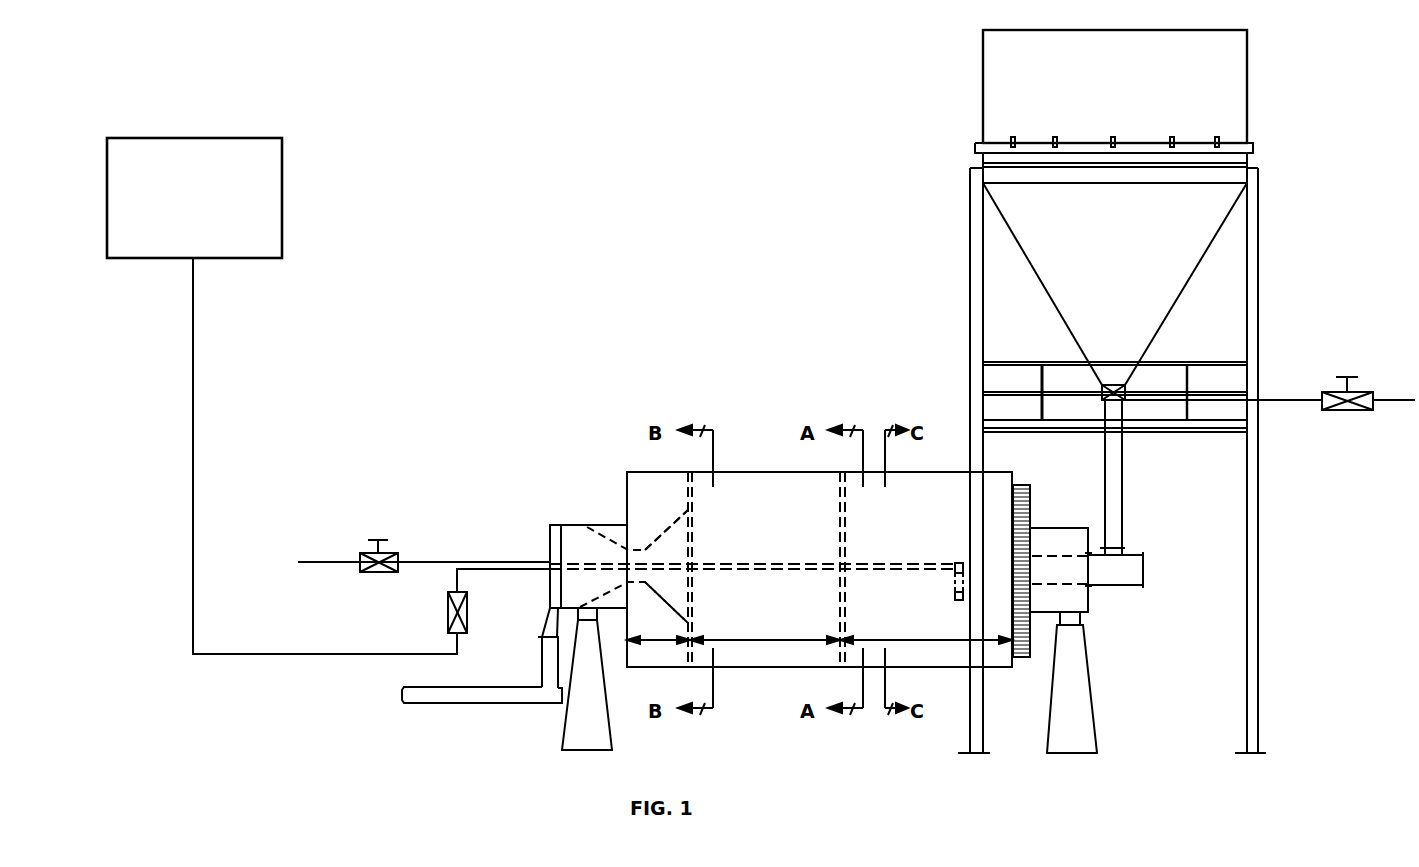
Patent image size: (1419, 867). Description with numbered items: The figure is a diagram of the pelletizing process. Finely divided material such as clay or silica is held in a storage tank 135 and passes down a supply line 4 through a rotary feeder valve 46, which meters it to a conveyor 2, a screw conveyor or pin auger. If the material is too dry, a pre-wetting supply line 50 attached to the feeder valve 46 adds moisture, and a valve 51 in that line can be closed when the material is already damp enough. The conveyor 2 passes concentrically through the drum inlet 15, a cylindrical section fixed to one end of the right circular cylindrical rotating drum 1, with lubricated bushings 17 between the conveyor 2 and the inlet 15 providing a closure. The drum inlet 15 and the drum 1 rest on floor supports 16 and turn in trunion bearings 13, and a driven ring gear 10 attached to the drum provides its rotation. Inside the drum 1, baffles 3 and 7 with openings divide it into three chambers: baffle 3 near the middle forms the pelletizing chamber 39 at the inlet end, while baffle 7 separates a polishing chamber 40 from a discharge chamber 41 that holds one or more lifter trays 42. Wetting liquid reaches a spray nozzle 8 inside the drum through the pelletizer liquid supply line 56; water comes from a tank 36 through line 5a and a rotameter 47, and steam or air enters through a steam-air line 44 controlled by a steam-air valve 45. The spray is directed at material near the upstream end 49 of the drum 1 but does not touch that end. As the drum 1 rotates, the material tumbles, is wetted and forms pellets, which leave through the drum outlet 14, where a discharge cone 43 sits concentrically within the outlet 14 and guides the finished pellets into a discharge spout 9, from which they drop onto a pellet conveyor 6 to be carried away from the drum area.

The rotating drum 1 is at (906, 474).
The conveyor 2 is at (1124, 583).
The baffle 3 is at (842, 544).
The supply line 4 is at (1123, 465).
The line 5a is at (228, 350).
The pellet conveyor 6 is at (480, 694).
The baffle 7 is at (676, 526).
The spray nozzle 8 is at (955, 596).
The discharge spout 9 is at (533, 640).
The driven ring gear 10 is at (1015, 487).
The trunion bearings 13 is at (597, 620).
The drum outlet 14 is at (548, 585).
The drum inlet 15 is at (1070, 553).
The floor supports 16 is at (602, 740).
The lubricated bushings 17 is at (1090, 588).
The tank 36 is at (200, 203).
The pelletizing chamber 39 is at (903, 628).
The polishing chamber 40 is at (776, 628).
The discharge chamber 41 is at (668, 628).
The lifter trays 42 is at (678, 616).
The discharge cone 43 is at (607, 535).
The steam-air line 44 is at (431, 568).
The steam-air valve 45 is at (387, 552).
The rotary feeder valve 46 is at (1102, 390).
The rotameter 47 is at (467, 603).
The upstream end 49 is at (1014, 516).
The pre-wetting supply line 50 is at (1260, 399).
The valve 51 is at (1386, 376).
The pelletizer liquid supply line 56 is at (767, 568).
The storage tank 135 is at (1120, 95).